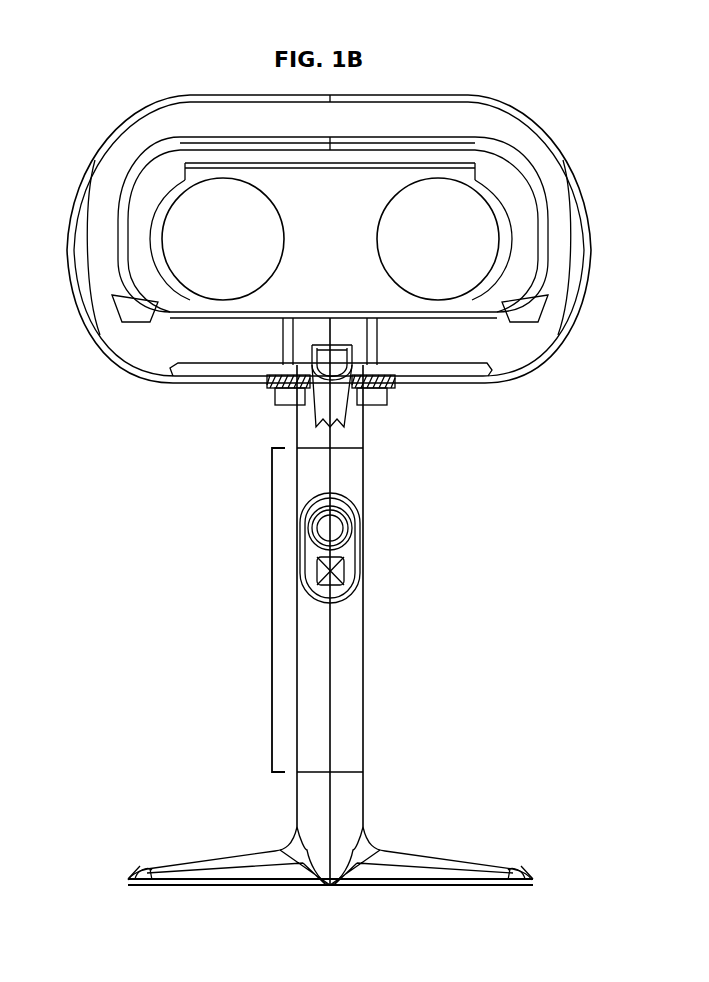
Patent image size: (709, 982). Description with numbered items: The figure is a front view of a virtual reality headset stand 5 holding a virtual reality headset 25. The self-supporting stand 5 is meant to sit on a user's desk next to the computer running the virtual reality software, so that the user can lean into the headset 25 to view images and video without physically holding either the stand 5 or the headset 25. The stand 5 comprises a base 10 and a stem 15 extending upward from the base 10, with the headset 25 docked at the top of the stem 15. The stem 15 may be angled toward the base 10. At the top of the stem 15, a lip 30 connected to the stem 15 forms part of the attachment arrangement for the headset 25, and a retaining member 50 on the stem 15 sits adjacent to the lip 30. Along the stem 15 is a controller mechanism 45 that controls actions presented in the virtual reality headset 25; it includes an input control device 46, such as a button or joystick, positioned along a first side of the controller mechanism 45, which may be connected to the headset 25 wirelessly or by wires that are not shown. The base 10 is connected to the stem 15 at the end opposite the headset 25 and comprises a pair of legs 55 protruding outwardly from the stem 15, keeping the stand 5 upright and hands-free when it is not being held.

The virtual reality headset stand 5 is at (388, 505).
The base 10 is at (334, 884).
The stem 15 is at (364, 792).
The virtual reality headset 25 is at (595, 237).
The lip 30 is at (268, 397).
The controller mechanism 45 is at (272, 610).
The input control device 46 is at (345, 575).
The retaining member 50 is at (343, 350).
The legs 55 is at (128, 880).